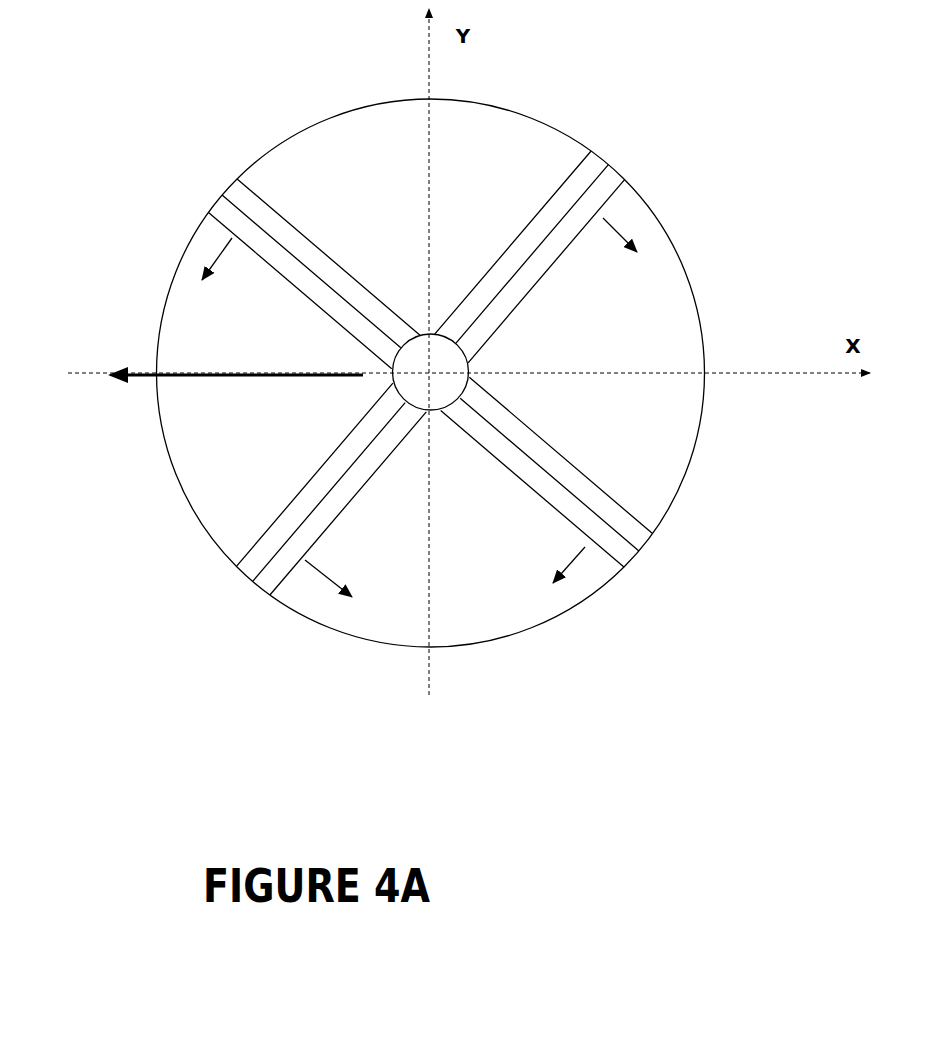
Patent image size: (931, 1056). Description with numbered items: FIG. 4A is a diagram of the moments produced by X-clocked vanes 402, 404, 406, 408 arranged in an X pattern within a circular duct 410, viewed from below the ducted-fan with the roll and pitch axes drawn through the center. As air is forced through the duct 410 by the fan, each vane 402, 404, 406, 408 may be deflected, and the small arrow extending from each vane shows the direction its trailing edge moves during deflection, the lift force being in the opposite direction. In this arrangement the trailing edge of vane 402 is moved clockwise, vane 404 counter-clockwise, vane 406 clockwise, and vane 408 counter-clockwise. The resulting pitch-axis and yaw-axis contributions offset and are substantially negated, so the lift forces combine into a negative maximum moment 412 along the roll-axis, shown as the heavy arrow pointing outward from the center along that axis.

The vane 402 is at (527, 222).
The vane 404 is at (307, 477).
The vane 406 is at (580, 472).
The vane 408 is at (328, 253).
The duct 410 is at (308, 130).
The maximum moment 412 is at (147, 372).